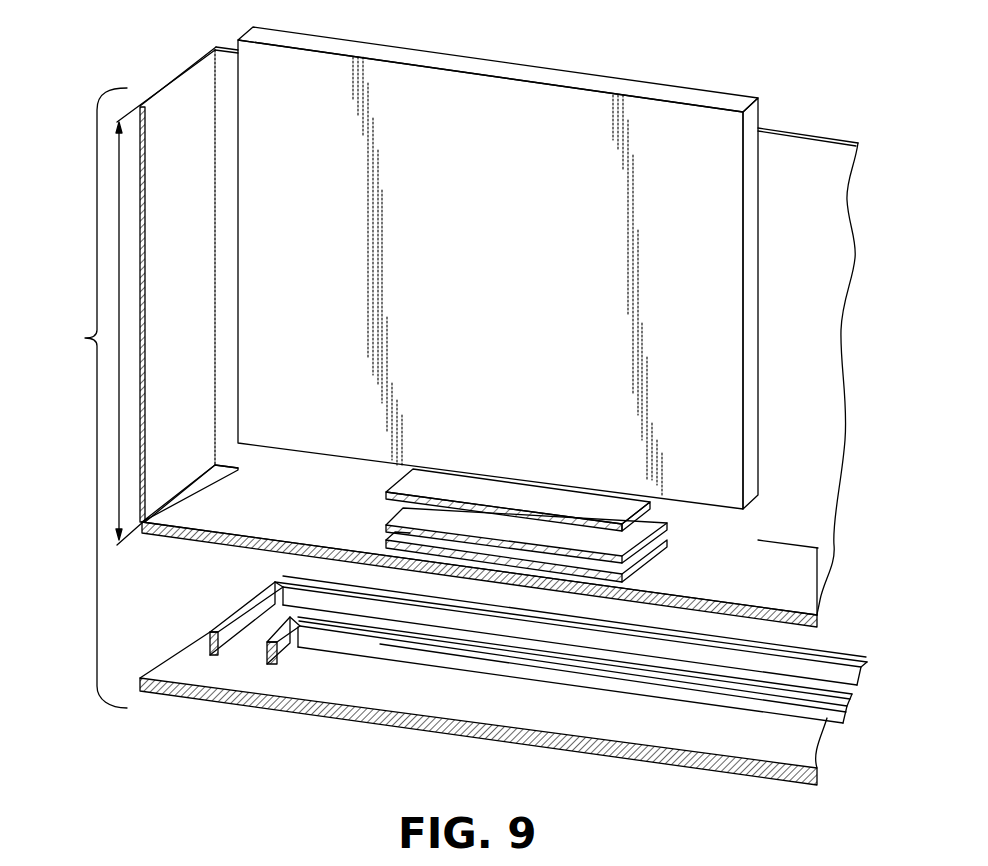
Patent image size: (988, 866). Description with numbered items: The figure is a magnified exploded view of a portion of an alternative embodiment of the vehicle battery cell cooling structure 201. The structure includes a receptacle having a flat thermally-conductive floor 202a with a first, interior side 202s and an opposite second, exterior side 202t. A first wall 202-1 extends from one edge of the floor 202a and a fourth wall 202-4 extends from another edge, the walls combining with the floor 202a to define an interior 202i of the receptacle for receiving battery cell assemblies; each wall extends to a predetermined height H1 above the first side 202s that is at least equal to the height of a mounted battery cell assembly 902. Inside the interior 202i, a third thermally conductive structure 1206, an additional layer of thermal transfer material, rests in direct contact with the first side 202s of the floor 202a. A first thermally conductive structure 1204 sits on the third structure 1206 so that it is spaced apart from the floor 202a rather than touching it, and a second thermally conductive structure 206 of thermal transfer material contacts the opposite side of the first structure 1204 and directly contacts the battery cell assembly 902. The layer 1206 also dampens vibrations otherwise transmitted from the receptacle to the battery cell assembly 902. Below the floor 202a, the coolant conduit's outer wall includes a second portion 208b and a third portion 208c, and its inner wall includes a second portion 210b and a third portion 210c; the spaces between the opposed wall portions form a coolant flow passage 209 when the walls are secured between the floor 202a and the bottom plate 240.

The vehicle battery cell cooling structure 201 is at (86, 398).
The predetermined height H1 is at (160, 297).
The first wall 202-1 is at (177, 217).
The fourth wall 202-4 is at (227, 78).
The interior of the receptacle 202i is at (806, 318).
The first side of the floor 202s is at (230, 508).
The floor 202a is at (793, 583).
The second side of the floor 202t is at (777, 627).
The battery cell assembly 902 is at (712, 88).
The second thermally conductive structure 206 is at (423, 486).
The first thermally conductive structure 1204 is at (428, 517).
The third thermally conductive structure 1206 is at (645, 556).
The second portion of the outer wall 208b is at (268, 607).
The third portion of the outer wall 208c is at (812, 668).
The coolant flow passage 209 is at (257, 647).
The second portion of the inner wall 210b is at (287, 649).
The third portion of the inner wall 210c is at (820, 714).
The bottom plate 240 is at (795, 750).